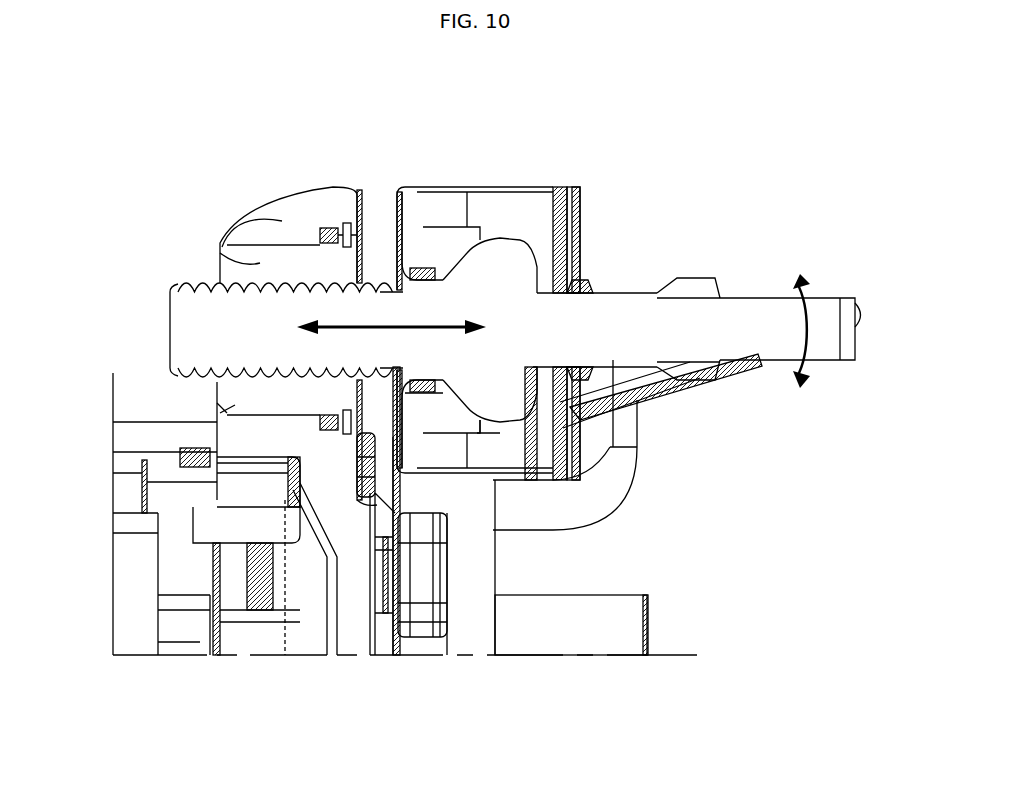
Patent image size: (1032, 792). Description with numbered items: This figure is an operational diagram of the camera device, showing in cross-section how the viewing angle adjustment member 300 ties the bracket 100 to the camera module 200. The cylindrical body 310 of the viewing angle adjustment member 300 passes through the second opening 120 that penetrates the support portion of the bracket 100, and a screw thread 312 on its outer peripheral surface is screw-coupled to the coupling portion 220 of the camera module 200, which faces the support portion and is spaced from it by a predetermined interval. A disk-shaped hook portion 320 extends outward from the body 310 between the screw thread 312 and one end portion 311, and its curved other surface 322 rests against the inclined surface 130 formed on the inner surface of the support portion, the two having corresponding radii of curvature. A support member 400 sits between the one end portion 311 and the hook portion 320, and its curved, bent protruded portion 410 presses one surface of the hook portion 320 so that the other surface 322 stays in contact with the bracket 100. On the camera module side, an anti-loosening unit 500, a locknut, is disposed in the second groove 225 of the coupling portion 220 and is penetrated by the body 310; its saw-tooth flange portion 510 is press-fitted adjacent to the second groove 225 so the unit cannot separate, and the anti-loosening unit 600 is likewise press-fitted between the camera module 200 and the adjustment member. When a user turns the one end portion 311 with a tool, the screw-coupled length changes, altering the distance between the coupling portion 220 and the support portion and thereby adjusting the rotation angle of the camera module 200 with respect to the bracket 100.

The bracket 100 is at (470, 610).
The second opening 120 is at (423, 267).
The inclined surface 130 is at (467, 223).
The camera module 200 is at (320, 620).
The coupling portion 220 is at (287, 213).
The second groove 225 is at (260, 263).
The viewing angle adjustment member 300 is at (623, 340).
The body 310 is at (773, 298).
The one end portion 311 is at (857, 300).
The screw thread 312 is at (187, 383).
The hook portion 320 is at (560, 193).
The other surface 322 is at (487, 240).
The support member 400 is at (573, 213).
The protruded portion 410 is at (580, 267).
The anti-loosening unit 500 is at (227, 247).
The flange portion 510 is at (330, 227).
The anti-loosening unit 600 is at (583, 390).